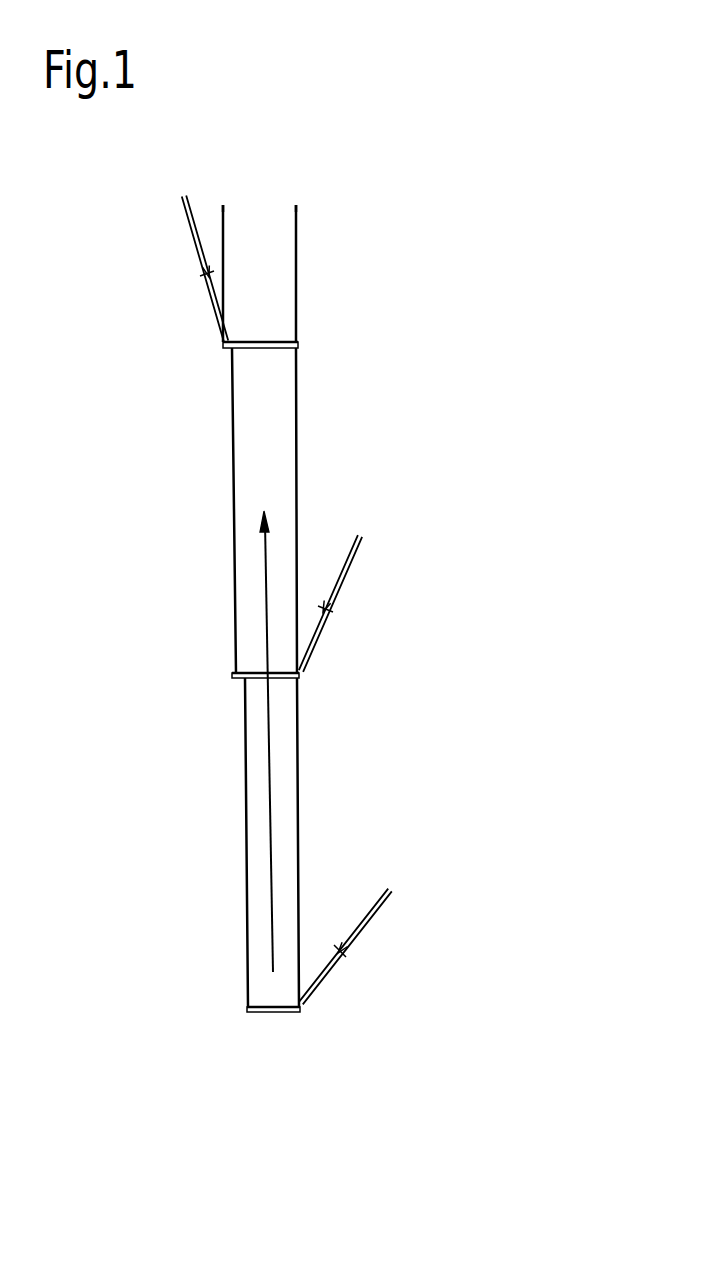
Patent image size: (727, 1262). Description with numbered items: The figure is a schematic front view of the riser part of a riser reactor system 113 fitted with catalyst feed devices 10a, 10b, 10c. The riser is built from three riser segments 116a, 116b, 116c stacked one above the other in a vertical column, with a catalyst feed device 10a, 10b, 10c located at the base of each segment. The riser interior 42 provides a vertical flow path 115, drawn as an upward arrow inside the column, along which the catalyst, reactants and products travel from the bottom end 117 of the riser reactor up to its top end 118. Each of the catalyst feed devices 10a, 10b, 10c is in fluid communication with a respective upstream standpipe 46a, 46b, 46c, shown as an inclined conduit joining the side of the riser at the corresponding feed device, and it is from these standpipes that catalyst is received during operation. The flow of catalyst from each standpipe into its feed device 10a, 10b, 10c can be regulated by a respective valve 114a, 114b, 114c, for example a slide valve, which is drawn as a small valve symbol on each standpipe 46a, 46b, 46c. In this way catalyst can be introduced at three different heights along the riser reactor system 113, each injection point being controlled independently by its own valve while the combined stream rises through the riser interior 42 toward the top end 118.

The riser reactor system 113 is at (478, 218).
The top end 118 is at (268, 200).
The riser segment 116a is at (297, 282).
The riser segment 116b is at (296, 462).
The riser segment 116c is at (298, 812).
The catalyst feed device 10a is at (298, 345).
The catalyst feed device 10b is at (235, 676).
The catalyst feed device 10c is at (247, 1003).
The riser interior 42 is at (249, 783).
The vertical flow path 115 is at (265, 593).
The upstream standpipe 46a is at (193, 242).
The upstream standpipe 46b is at (357, 553).
The upstream standpipe 46c is at (372, 915).
The valve 114a is at (208, 277).
The valve 114b is at (330, 613).
The valve 114c is at (342, 956).
The bottom end 117 is at (276, 1026).